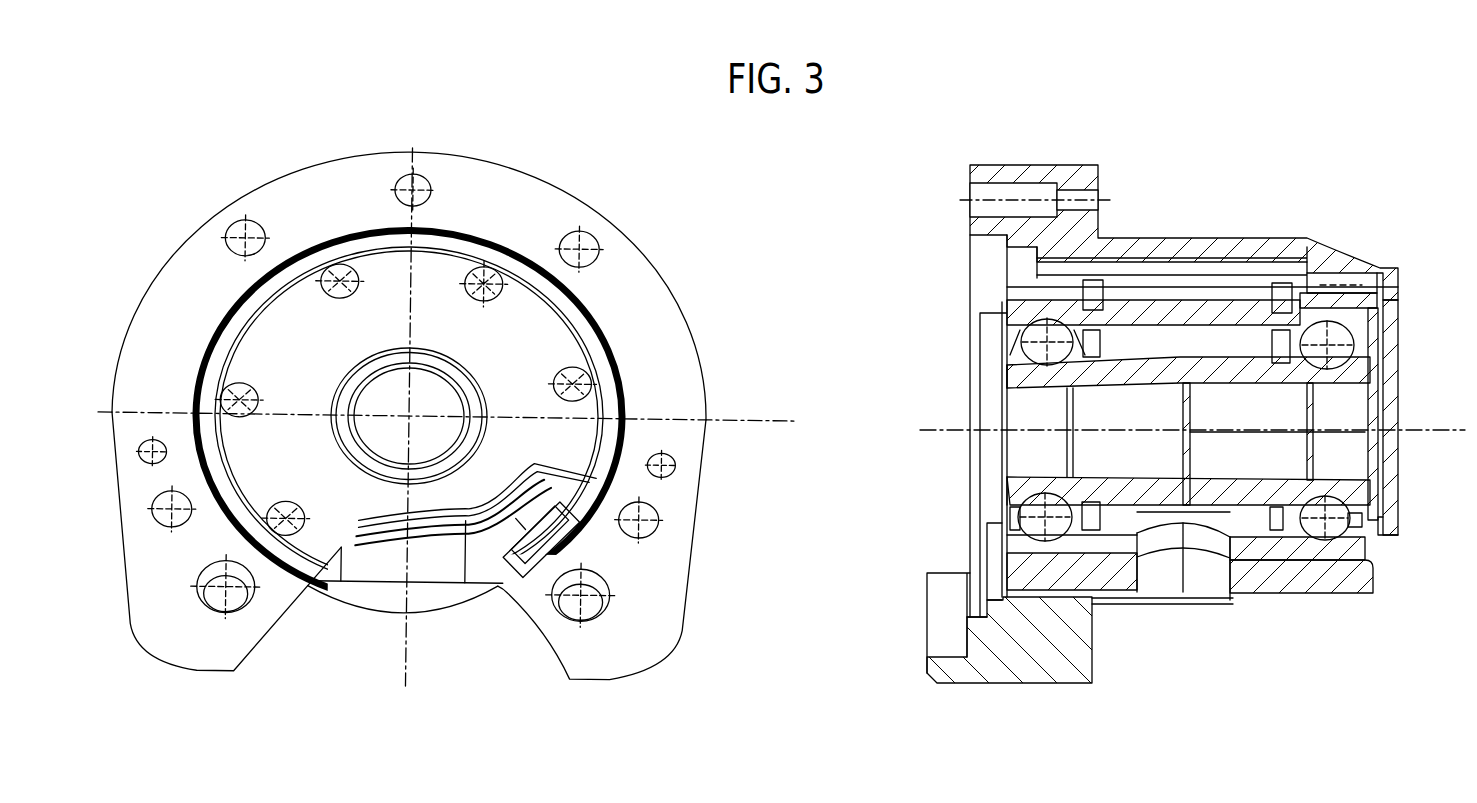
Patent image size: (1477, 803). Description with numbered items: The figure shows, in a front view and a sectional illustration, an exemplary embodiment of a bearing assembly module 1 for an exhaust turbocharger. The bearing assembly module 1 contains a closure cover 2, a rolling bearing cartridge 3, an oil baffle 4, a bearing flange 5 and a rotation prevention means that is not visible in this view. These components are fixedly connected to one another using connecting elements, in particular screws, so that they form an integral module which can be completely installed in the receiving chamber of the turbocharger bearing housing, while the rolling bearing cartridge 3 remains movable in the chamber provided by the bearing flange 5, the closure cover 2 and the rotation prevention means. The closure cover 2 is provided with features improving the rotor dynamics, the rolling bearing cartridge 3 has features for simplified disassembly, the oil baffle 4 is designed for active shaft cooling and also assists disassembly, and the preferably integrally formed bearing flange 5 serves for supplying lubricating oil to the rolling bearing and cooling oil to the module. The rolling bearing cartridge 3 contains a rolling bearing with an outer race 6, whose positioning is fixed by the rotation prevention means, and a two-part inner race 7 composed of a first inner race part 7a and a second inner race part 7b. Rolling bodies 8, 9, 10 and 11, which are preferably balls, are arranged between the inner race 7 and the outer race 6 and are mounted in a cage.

The bearing assembly module 1 is at (1222, 162).
The closure cover 2 is at (1162, 424).
The rolling bearing cartridge 3 is at (1287, 377).
The oil baffle 4 is at (1398, 430).
The bearing flange 5 is at (1330, 582).
The outer race 6 is at (1207, 318).
The two-part inner race 7 is at (1187, 420).
The first inner race part 7a is at (1020, 370).
The second inner race part 7b is at (1393, 377).
The rolling body 8 is at (1040, 340).
The rolling body 9 is at (1030, 512).
The rolling body 10 is at (1333, 342).
The rolling body 11 is at (1333, 512).